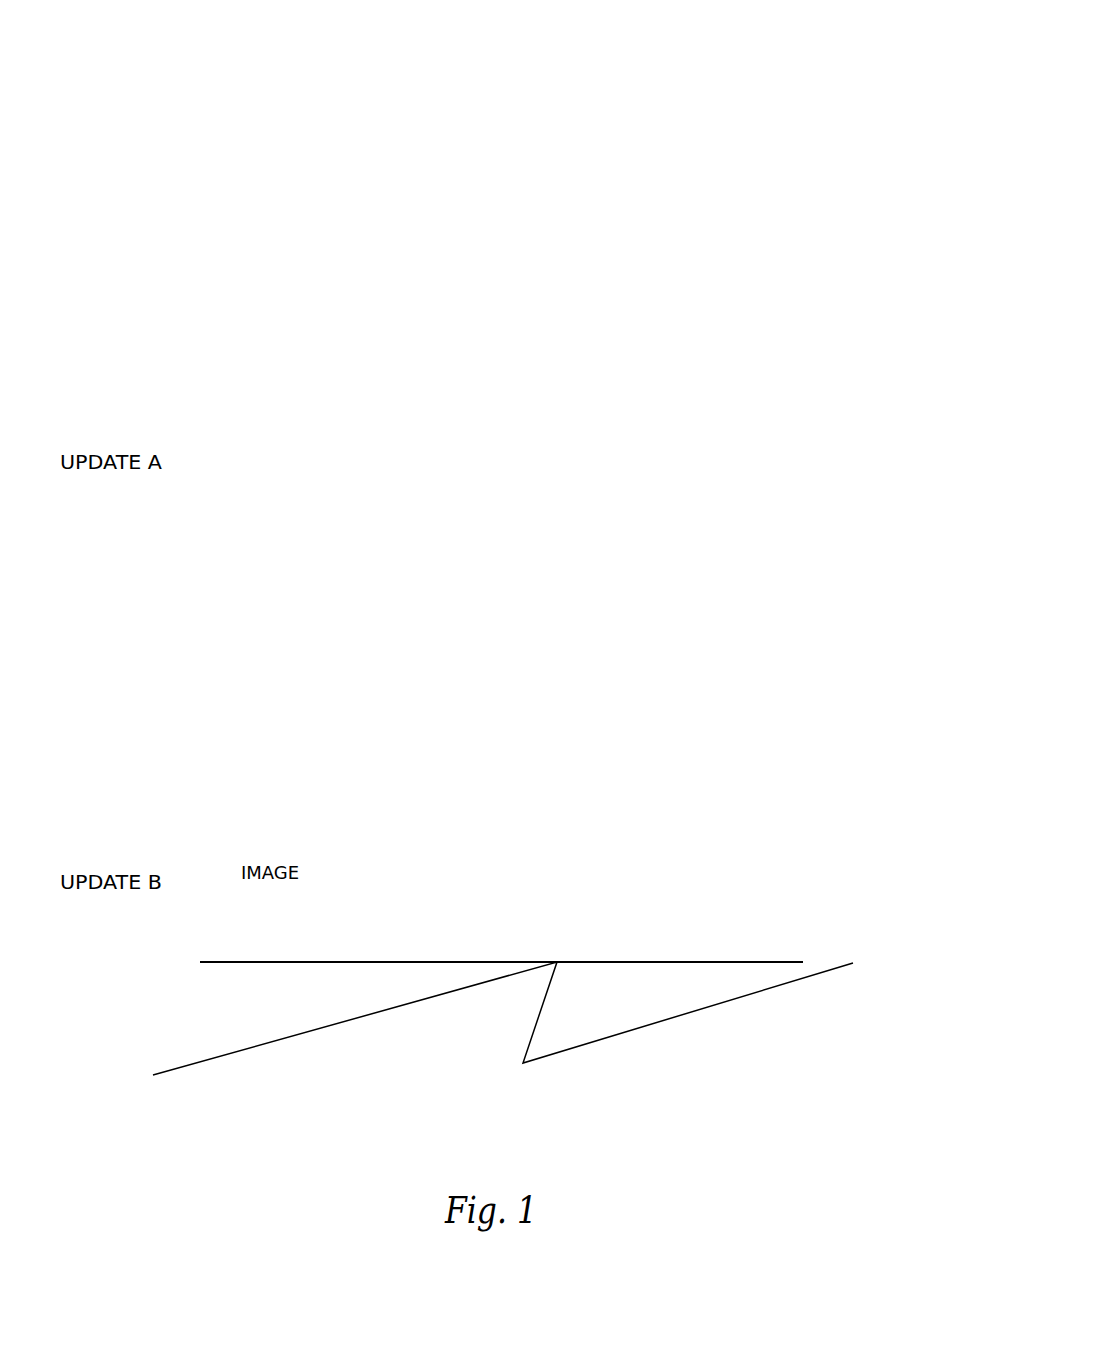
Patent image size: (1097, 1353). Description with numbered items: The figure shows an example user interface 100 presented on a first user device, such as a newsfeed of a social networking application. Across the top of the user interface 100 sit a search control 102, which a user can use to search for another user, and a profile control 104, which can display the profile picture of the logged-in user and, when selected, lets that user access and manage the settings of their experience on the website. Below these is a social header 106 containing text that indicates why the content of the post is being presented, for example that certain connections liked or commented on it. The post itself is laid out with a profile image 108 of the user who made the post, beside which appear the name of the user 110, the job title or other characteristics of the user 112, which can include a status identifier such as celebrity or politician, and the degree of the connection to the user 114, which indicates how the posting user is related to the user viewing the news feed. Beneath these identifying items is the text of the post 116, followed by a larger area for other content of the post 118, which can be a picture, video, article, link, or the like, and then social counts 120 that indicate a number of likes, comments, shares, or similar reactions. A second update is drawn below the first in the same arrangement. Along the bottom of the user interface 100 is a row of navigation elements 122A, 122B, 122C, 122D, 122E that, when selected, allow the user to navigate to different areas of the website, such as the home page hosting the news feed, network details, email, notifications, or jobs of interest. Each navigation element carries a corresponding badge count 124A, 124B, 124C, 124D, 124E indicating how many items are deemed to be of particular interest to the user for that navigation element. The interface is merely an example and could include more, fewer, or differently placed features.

The user interface 100 is at (676, 41).
The search control 102 is at (390, 92).
The profile control 104 is at (730, 92).
The social header 106 is at (405, 213).
The profile image 108 is at (290, 312).
The name of the user 110 is at (447, 303).
The job title or other characteristics of the user 112 is at (705, 358).
The degree of the connection to the user 114 is at (462, 407).
The text of the post 116 is at (680, 440).
The other content of the post 118 is at (783, 537).
The social counts 120 is at (352, 707).
The navigation element 122A is at (224, 1128).
The navigation element 122B is at (387, 1123).
The navigation element 122C is at (518, 1123).
The navigation element 122D is at (637, 1123).
The navigation element 122E is at (760, 1123).
The badge count 124A is at (285, 1107).
The badge count 124B is at (407, 1100).
The badge count 124C is at (538, 1100).
The badge count 124D is at (657, 1100).
The badge count 124E is at (778, 1100).